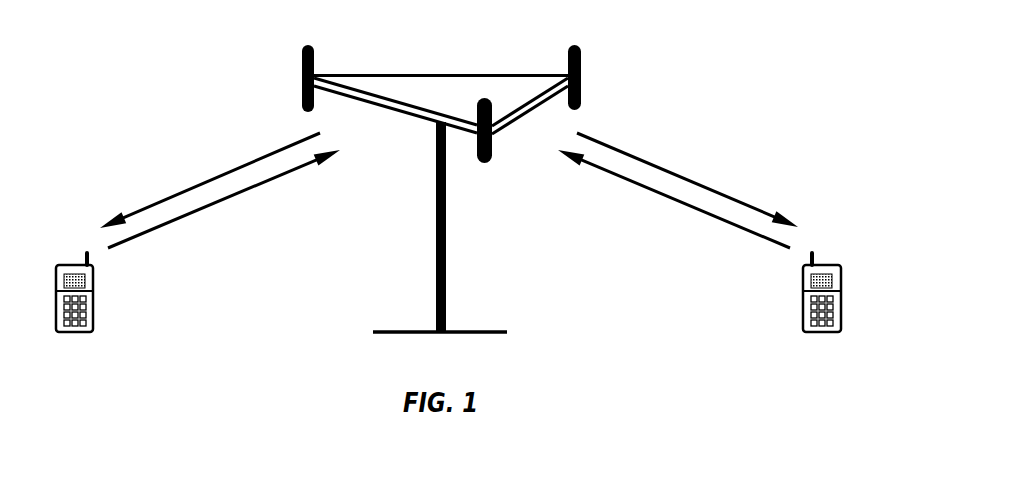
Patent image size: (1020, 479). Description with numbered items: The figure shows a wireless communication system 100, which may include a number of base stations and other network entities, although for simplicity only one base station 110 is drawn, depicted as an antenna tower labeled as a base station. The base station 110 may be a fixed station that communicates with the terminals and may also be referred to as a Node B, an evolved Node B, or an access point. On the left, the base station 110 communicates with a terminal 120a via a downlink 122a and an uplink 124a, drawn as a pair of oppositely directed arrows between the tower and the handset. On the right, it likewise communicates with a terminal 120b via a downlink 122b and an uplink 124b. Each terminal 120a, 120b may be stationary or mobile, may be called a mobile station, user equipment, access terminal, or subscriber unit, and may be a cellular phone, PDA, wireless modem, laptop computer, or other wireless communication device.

The wireless communication system 100 is at (736, 60).
The base station 110 is at (438, 74).
The terminal 120a is at (71, 265).
The terminal 120b is at (831, 265).
The downlink 122a is at (208, 178).
The uplink 124a is at (227, 199).
The downlink 122b is at (688, 178).
The uplink 124b is at (672, 199).